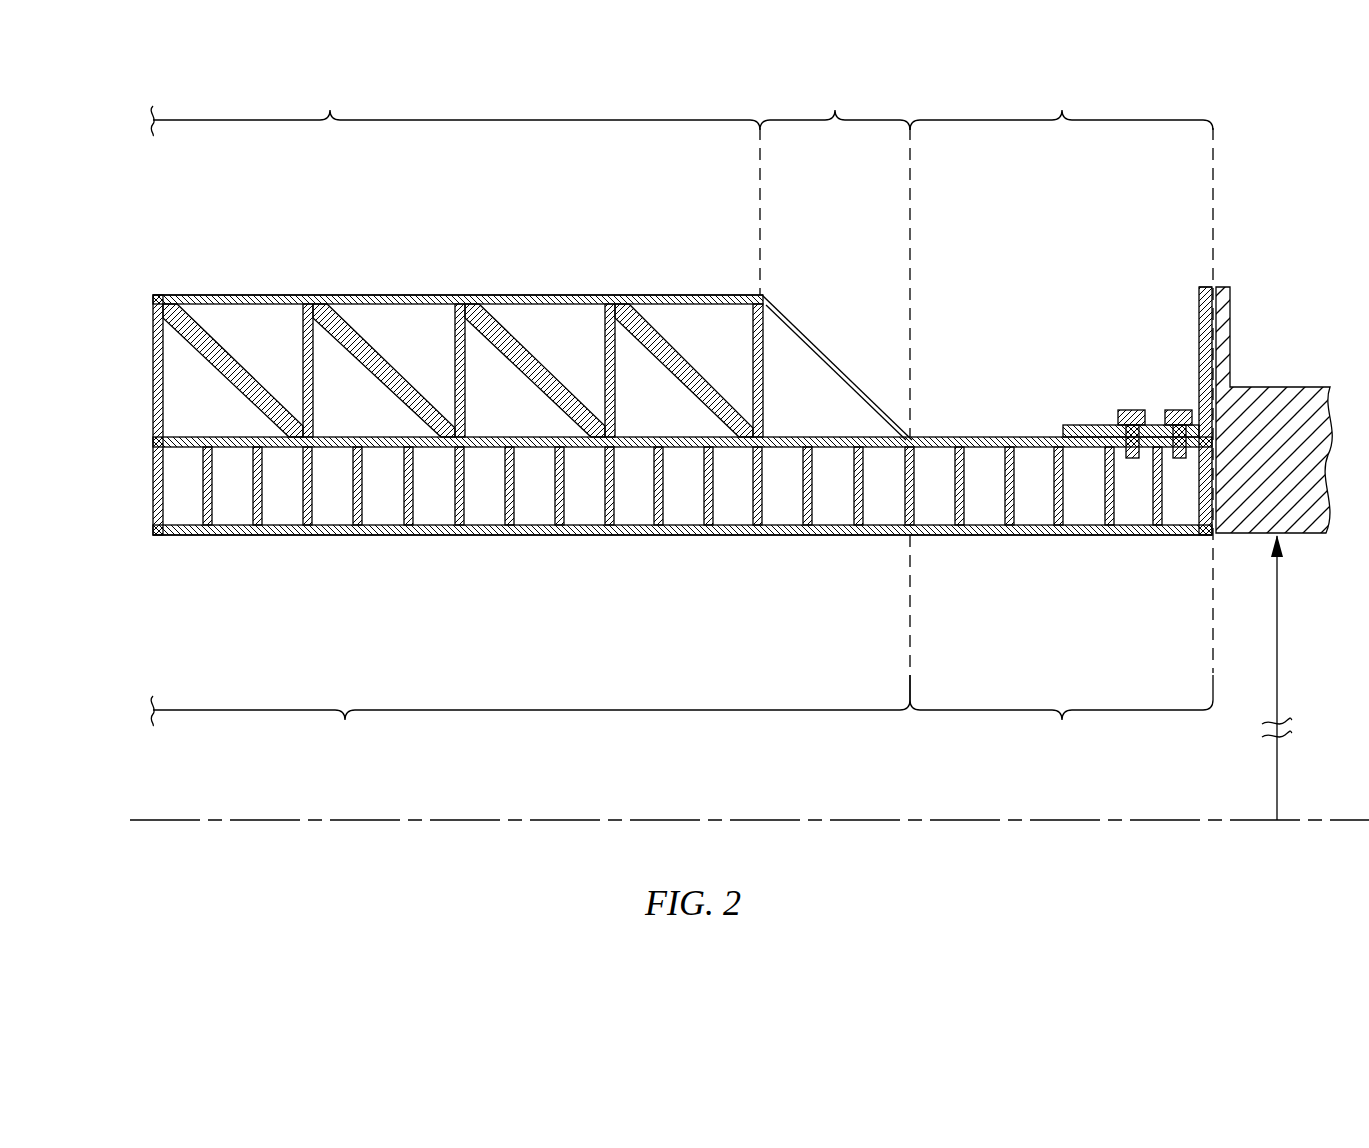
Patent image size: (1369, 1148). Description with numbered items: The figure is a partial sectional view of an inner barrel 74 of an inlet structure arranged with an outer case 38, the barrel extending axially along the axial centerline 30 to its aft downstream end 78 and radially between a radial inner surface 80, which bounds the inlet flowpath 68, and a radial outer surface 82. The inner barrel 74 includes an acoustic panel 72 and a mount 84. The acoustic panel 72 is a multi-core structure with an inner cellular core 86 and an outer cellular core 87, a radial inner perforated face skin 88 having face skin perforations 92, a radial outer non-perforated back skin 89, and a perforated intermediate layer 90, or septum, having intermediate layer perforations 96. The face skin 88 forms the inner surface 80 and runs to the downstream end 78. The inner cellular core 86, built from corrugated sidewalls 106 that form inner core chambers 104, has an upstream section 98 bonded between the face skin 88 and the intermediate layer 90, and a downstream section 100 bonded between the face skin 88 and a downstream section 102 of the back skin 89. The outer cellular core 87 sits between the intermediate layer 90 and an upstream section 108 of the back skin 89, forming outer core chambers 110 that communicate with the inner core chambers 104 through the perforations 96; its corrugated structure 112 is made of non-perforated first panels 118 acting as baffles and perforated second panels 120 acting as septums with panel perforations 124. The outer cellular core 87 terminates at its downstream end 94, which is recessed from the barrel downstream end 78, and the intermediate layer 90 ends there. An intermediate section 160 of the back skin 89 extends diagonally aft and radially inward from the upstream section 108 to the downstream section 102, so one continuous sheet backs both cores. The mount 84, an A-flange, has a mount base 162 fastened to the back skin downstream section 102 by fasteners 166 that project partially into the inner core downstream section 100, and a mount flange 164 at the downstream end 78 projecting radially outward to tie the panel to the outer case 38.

The axial centerline 30 is at (1342, 815).
The outer case 38 is at (1320, 362).
The inlet flowpath 68 is at (322, 672).
The acoustic panel 72 is at (183, 290).
The inner barrel 74 is at (460, 295).
The downstream end 78 is at (1217, 505).
The radial inner surface 80 is at (363, 535).
The radial outer surface 82 is at (352, 295).
The mount 84 is at (1190, 345).
The inner cellular core 86 is at (148, 488).
The outer cellular core 87 is at (148, 378).
The face skin 88 is at (148, 532).
The back skin 89 is at (148, 295).
The intermediate layer 90 is at (148, 442).
The face skin perforations 92 is at (545, 535).
The outer core downstream end 94 is at (918, 437).
The intermediate layer perforations 96 is at (397, 437).
The upstream section 98 is at (530, 712).
The downstream section 100 is at (1061, 712).
The downstream section 102 is at (1061, 376).
The inner core chambers 104 is at (366, 496).
The corrugated sidewalls 106 is at (163, 508).
The upstream section 108 is at (450, 108).
The outer core chambers 110 is at (288, 330).
The corrugated structure 112 is at (148, 338).
The first panels 118 is at (227, 325).
The second panels 120 is at (466, 343).
The panel perforations 124 is at (465, 418).
The intermediate section 160 is at (831, 260).
The mount base 162 is at (1073, 425).
The mount flange 164 is at (1195, 292).
The fasteners 166 is at (1178, 410).